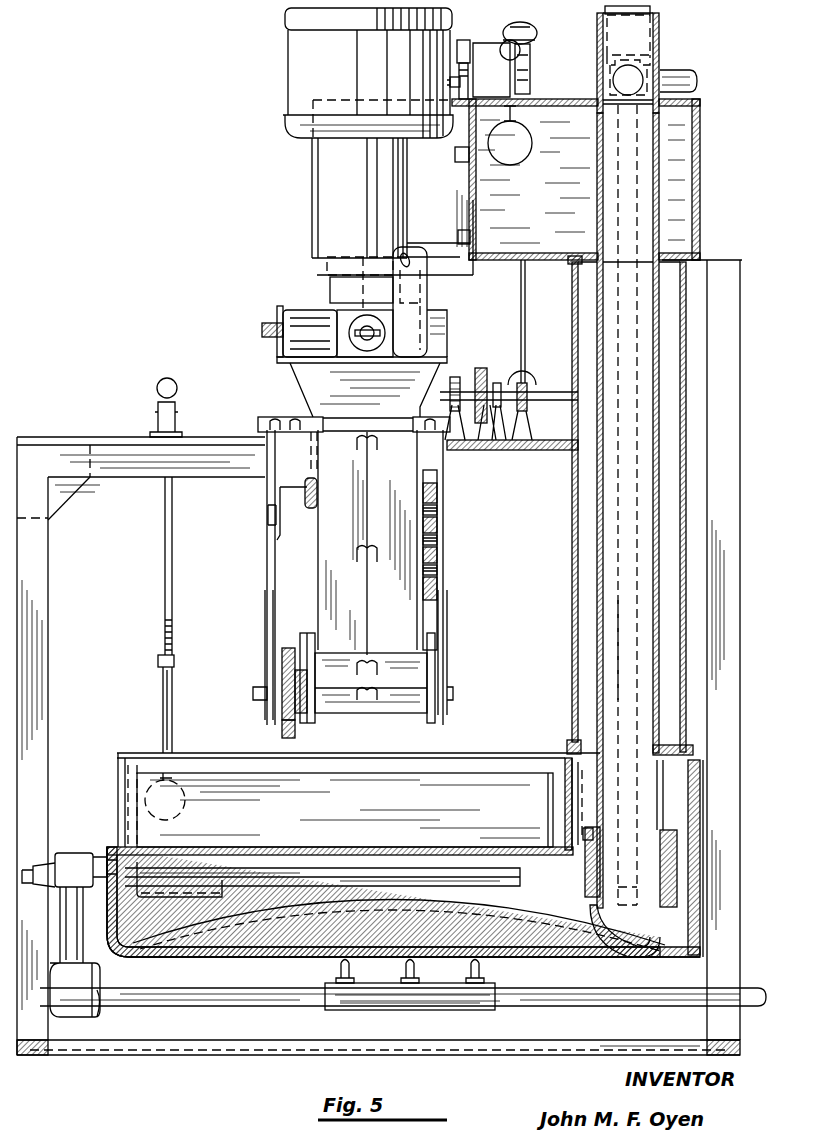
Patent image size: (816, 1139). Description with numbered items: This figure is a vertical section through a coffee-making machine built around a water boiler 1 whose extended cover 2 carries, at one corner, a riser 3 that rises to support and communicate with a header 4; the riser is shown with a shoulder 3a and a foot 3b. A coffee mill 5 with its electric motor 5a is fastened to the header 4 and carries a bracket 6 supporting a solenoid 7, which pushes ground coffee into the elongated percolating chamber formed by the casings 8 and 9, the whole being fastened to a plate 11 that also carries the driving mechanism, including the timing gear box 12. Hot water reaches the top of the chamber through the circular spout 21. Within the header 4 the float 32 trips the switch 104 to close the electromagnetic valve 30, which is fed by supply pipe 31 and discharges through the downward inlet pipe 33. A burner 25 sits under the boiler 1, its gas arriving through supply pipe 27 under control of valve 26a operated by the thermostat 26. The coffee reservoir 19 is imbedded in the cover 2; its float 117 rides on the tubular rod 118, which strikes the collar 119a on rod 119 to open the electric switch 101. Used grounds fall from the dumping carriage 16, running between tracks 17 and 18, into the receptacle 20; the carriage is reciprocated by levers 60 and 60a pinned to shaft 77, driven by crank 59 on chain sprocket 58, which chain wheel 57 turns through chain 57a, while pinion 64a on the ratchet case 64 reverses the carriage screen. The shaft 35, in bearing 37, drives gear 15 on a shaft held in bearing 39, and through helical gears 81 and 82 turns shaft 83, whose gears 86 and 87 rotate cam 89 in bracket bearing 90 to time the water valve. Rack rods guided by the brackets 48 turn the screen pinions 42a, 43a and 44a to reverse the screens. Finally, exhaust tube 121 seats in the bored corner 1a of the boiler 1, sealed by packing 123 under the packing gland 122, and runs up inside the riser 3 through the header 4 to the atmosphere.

The water boiler 1 is at (232, 958).
The corner of boiler 1a is at (602, 912).
The extended cover 2 is at (117, 780).
The riser 3 is at (572, 545).
The column casing shoulder 3a is at (573, 280).
The column casing foot 3b is at (567, 745).
The header 4 is at (697, 123).
The coffee mill 5 is at (300, 124).
The electric motor 5a is at (330, 210).
The bracket 6 is at (410, 292).
The solenoid 7 is at (277, 328).
The percolating chamber casing 8 is at (330, 610).
The percolating chamber casing 9 is at (410, 627).
The plate 11 is at (75, 440).
The timing gear box 12 is at (327, 272).
The gear 15 is at (480, 368).
The dumping carriage 16 is at (367, 715).
The track 17 is at (312, 725).
The track 18 is at (430, 725).
The coffee reservoir 19 is at (165, 893).
The receptacle 20 is at (548, 805).
The circular spout 21 is at (340, 296).
The burner 25 is at (327, 1013).
The thermostat 26 is at (222, 893).
The valve 26a is at (85, 841).
The supply pipe 27 is at (597, 1003).
The electromagnetic valve 30 is at (650, 14).
The supply pipe 31 is at (687, 63).
The float 32 is at (518, 132).
The inlet pipe 33 is at (623, 565).
The shaft 35 is at (569, 398).
The bearing 37 is at (497, 383).
The bearing 39 is at (464, 383).
The screen pinion 42a is at (445, 593).
The screen pinion 43a is at (440, 545).
The screen pinion 44a is at (445, 490).
The brackets 48 is at (432, 528).
The chain wheel 57 is at (283, 425).
The chain 57a is at (311, 462).
The chain sprocket 58 is at (318, 488).
The crank 59 is at (287, 524).
The lever 60 is at (268, 660).
The lever 60a is at (448, 661).
The ratchet case 64 is at (287, 652).
The pinion 64a is at (288, 738).
The shaft 77 is at (386, 543).
The helical gear 81 is at (527, 407).
The helical gear 82 is at (530, 377).
The shaft 83 is at (525, 347).
The helical gear 86 is at (535, 29).
The helical gear 87 is at (530, 62).
The cam 89 is at (466, 58).
The bracket bearing 90 is at (487, 67).
The electric switch 101 is at (178, 390).
The electric switch 104 is at (503, 60).
The float 117 is at (186, 806).
The tubular rod 118 is at (163, 716).
The rod 119 is at (170, 565).
The collar 119a is at (158, 660).
The tube 121 is at (610, 638).
The packing gland 122 is at (590, 828).
The packing 123 is at (585, 876).